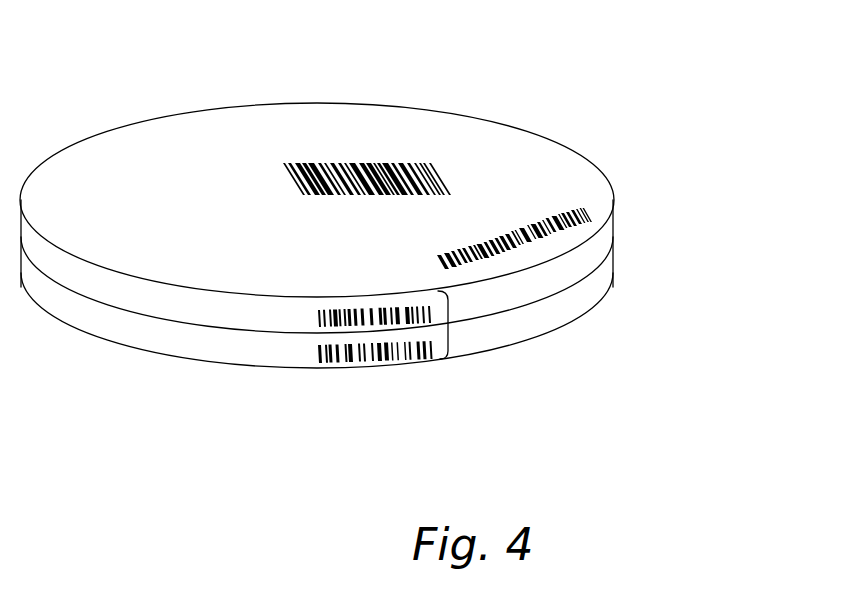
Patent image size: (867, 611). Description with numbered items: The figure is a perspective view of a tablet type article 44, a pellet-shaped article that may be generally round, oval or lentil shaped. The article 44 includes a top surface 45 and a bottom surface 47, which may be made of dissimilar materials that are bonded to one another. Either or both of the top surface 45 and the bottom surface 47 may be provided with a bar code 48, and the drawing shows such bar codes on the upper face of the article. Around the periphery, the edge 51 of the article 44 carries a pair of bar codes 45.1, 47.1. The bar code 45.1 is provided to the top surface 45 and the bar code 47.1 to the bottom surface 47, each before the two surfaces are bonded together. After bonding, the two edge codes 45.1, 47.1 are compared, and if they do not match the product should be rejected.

The tablet type article 44 is at (560, 137).
The top surface 45 is at (442, 150).
The bottom surface 47 is at (120, 335).
The bar code 48 is at (593, 223).
The bar code 45.1 is at (318, 316).
The bar code 47.1 is at (318, 353).
The edge 51 is at (449, 330).